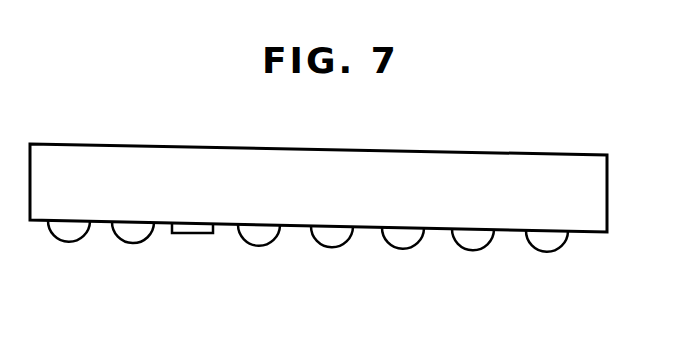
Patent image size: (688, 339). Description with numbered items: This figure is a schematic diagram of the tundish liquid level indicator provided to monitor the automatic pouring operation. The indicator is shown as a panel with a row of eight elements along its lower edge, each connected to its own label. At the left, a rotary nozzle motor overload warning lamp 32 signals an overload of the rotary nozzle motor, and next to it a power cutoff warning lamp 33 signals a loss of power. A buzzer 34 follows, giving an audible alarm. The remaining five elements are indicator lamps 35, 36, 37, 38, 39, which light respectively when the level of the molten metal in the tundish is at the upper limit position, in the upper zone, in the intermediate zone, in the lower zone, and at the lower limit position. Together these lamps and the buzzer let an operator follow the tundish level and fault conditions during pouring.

The rotary nozzle motor overload warning lamp 32 is at (69, 242).
The power cutoff warning lamp 33 is at (133, 243).
The buzzer 34 is at (193, 233).
The indicator lamp 35 is at (259, 246).
The indicator lamp 36 is at (332, 247).
The indicator lamp 37 is at (403, 249).
The indicator lamp 38 is at (473, 250).
The indicator lamp 39 is at (547, 252).